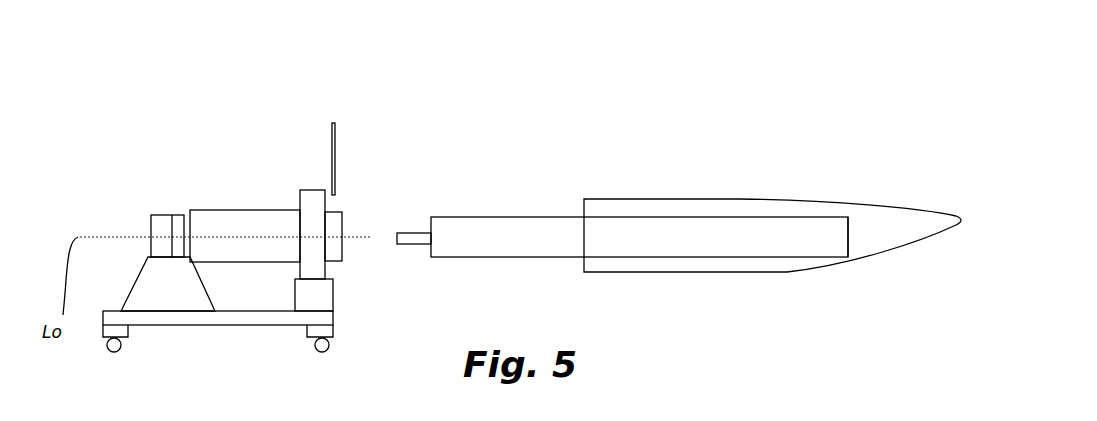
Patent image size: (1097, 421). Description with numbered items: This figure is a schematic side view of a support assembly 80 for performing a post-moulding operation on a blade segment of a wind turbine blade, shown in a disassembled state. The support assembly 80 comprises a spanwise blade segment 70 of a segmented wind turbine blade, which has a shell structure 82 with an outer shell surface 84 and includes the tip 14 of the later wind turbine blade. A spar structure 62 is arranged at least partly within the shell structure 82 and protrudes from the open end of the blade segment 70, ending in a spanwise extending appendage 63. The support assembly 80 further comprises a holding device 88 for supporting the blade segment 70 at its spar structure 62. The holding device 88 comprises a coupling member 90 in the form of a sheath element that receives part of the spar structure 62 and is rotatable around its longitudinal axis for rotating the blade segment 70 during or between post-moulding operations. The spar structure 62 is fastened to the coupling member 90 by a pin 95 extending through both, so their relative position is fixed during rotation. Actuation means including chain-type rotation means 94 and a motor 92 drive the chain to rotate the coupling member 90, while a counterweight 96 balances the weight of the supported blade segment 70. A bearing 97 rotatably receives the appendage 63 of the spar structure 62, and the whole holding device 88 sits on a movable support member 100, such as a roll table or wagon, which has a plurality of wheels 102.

The tip 14 is at (948, 218).
The spar structure 62 is at (458, 233).
The spanwise extending appendage 63 is at (410, 237).
The blade segment 70 is at (627, 137).
The support assembly 80 is at (335, 63).
The shell structure 82 is at (730, 205).
The outer shell surface 84 is at (862, 236).
The holding device 88 is at (187, 162).
The coupling member 90 is at (273, 223).
The motor 92 is at (327, 295).
The chain-type rotation means 94 is at (310, 200).
The pin 95 is at (338, 140).
The counterweight 96 is at (137, 292).
The bearing 97 is at (177, 223).
The movable support member 100 is at (203, 318).
The wheels 102 is at (112, 349).